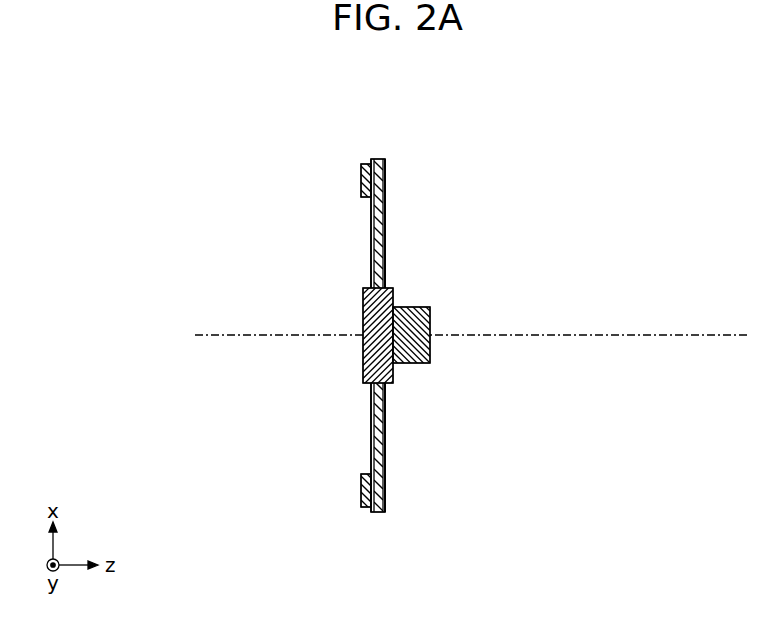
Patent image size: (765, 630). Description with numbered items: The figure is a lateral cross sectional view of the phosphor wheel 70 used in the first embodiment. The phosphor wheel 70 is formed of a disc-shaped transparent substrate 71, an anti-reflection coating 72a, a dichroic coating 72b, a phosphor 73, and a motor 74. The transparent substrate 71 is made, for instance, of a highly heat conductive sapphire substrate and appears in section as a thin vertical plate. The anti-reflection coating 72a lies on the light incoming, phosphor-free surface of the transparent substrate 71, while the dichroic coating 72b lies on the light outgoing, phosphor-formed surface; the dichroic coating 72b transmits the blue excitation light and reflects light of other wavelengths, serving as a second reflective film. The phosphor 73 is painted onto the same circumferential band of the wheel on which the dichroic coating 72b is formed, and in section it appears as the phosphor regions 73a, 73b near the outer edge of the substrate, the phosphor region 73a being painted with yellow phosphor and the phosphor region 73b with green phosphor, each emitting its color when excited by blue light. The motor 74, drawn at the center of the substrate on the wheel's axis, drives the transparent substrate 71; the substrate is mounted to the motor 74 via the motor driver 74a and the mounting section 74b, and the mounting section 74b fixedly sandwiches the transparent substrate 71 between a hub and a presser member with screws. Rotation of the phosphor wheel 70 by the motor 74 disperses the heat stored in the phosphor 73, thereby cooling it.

The phosphor wheel 70 is at (453, 117).
The transparent substrate 71 is at (383, 512).
The anti-reflection coating 72a is at (383, 440).
The dichroic coating 72b is at (368, 512).
The phosphor 73 is at (346, 177).
The phosphor region 73a is at (362, 188).
The phosphor region 73b is at (362, 490).
The motor 74 is at (515, 198).
The motor driver 74a is at (426, 307).
The mounting section 74b is at (394, 289).